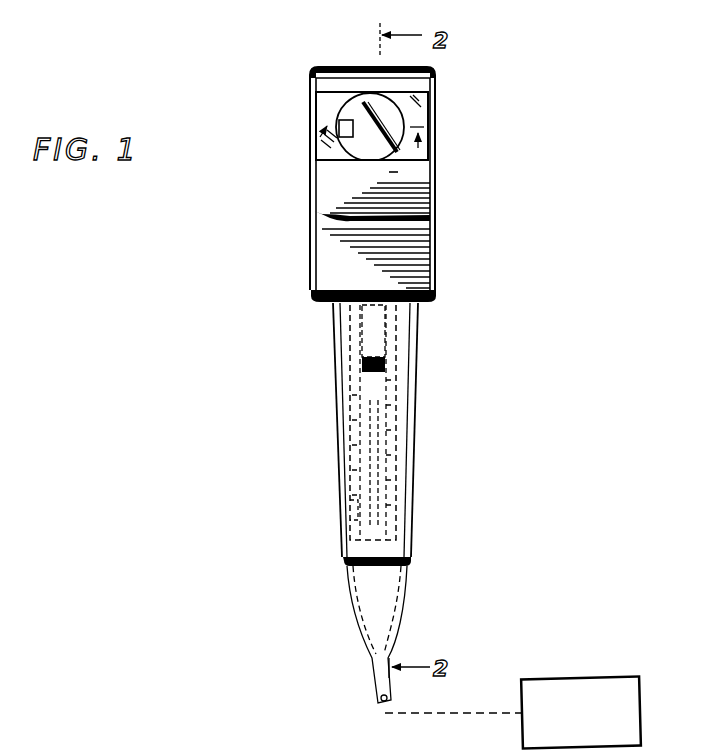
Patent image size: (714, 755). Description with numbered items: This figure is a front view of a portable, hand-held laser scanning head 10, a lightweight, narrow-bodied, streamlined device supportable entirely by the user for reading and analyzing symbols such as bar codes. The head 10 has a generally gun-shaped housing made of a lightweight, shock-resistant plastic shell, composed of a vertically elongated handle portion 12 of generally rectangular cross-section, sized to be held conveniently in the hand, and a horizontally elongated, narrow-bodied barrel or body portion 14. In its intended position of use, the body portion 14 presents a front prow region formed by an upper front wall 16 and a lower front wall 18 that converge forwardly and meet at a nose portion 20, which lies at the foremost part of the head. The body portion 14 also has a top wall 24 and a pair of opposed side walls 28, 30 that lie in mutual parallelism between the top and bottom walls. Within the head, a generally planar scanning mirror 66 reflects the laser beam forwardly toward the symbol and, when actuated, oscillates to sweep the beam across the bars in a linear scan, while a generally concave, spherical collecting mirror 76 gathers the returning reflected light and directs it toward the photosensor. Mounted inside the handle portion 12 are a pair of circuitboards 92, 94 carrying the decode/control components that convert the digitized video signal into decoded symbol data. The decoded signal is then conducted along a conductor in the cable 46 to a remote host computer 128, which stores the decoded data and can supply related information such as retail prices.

The laser scanning head 10 is at (462, 270).
The handle portion 12 is at (415, 470).
The body portion 14 is at (438, 242).
The upper front wall 16 is at (343, 193).
The lower front wall 18 is at (318, 256).
The nose portion 20 is at (315, 212).
The top wall 24 is at (327, 66).
The side wall 28 is at (413, 127).
The side wall 30 is at (312, 127).
The cable 46 is at (373, 688).
The scanning mirror 66 is at (341, 123).
The collecting mirror 76 is at (400, 111).
The circuitboard 92 is at (394, 525).
The circuitboard 94 is at (349, 510).
The host computer 128 is at (631, 670).